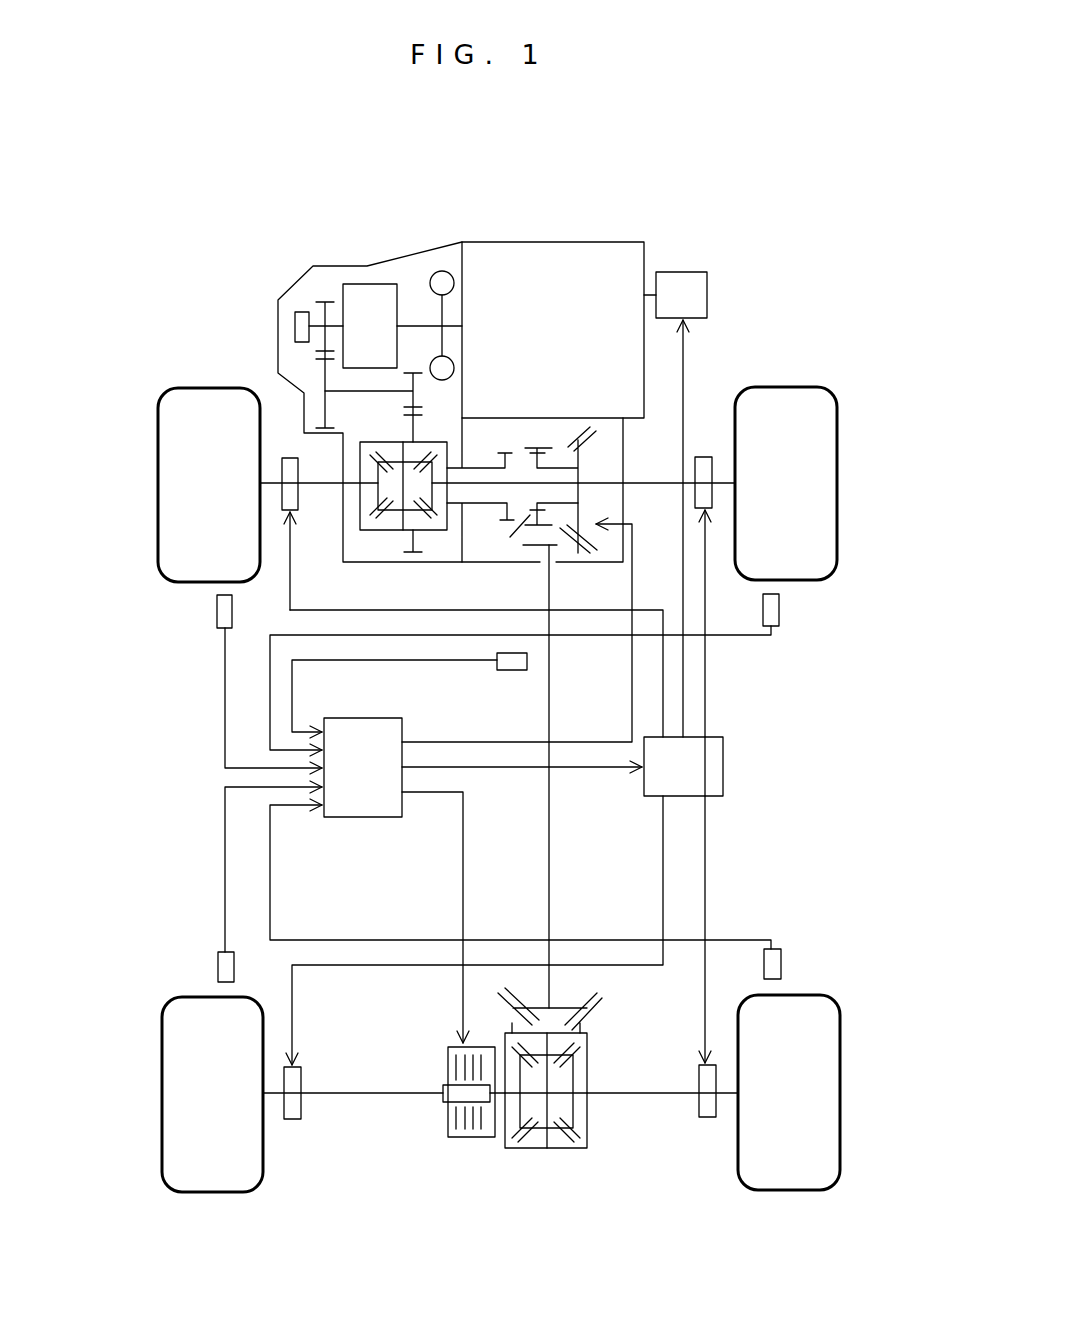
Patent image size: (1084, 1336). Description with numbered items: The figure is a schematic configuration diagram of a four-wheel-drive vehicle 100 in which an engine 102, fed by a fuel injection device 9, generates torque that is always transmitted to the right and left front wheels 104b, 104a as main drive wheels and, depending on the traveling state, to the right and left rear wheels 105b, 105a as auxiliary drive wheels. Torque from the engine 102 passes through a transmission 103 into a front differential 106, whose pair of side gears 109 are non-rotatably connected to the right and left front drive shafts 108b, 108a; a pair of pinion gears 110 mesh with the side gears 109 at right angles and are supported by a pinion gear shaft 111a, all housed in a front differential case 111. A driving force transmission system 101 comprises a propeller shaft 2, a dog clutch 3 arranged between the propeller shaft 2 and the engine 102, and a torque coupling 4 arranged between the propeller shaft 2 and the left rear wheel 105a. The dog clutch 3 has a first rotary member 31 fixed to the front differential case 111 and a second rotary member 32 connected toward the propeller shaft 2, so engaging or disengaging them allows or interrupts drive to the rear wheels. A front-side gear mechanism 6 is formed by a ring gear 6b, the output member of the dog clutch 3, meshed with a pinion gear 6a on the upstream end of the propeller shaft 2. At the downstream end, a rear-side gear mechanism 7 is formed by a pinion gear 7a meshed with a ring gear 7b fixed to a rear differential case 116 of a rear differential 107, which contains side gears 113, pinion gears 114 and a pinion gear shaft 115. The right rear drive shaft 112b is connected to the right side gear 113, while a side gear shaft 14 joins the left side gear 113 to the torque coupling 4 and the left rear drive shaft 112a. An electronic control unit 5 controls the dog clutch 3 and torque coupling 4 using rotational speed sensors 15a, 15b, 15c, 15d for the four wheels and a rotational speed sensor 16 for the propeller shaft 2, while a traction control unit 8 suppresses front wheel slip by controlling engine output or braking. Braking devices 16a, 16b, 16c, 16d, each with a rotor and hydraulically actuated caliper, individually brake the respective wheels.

The four-wheel-drive vehicle 100 is at (737, 170).
The transmission 103 is at (345, 252).
The engine 102 is at (520, 242).
The fuel injection device 9 is at (678, 272).
The driving force transmission system 101 is at (720, 300).
The first rotary member 31 is at (497, 462).
The dog clutch 3 is at (552, 428).
The second rotary member 32 is at (530, 515).
The gear mechanism on the front wheel side 6 is at (893, 493).
The pinion gear 6a is at (560, 548).
The ring gear 6b is at (598, 532).
The front differential 106 is at (370, 542).
The pinion gears 110 is at (383, 468).
The side gears 109 is at (380, 500).
The front differential case 111 is at (397, 458).
The pinion gear shaft 111a is at (378, 498).
The left drive shaft on the front wheel side 108a is at (345, 483).
The right drive shaft on the front wheel side 108b is at (645, 483).
The left front wheel 104a is at (158, 478).
The right front wheel 104b is at (837, 468).
The left rear wheel 105a is at (162, 1090).
The right rear wheel 105b is at (840, 1088).
The braking device 16a is at (282, 470).
The braking device 16b is at (712, 465).
The braking device 16c is at (284, 1078).
The braking device 16d is at (716, 1078).
The rotational speed sensor 15a is at (217, 607).
The rotational speed sensor 15b is at (779, 608).
The rotational speed sensor 15c is at (218, 965).
The rotational speed sensor 15d is at (781, 965).
The rotational speed sensor 16 is at (512, 670).
The electronic control unit 5 is at (350, 818).
The traction control unit 8 is at (723, 748).
The propeller shaft 2 is at (552, 857).
The gear mechanism on the rear wheel side 7 is at (782, 847).
The pinion gear 7a is at (598, 1000).
The ring gear 7b is at (520, 1000).
The torque coupling 4 is at (445, 1145).
The side gear shaft 14 is at (500, 1098).
The left drive shaft on the rear wheel side 112a is at (365, 1096).
The right drive shaft on the rear wheel side 112b is at (645, 1093).
The rear differential 107 is at (600, 1122).
The pinion gear shaft 115 is at (573, 1085).
The side gears 113 is at (580, 1060).
The pinion gears 114 is at (575, 1050).
The rear differential case 116 is at (578, 1150).